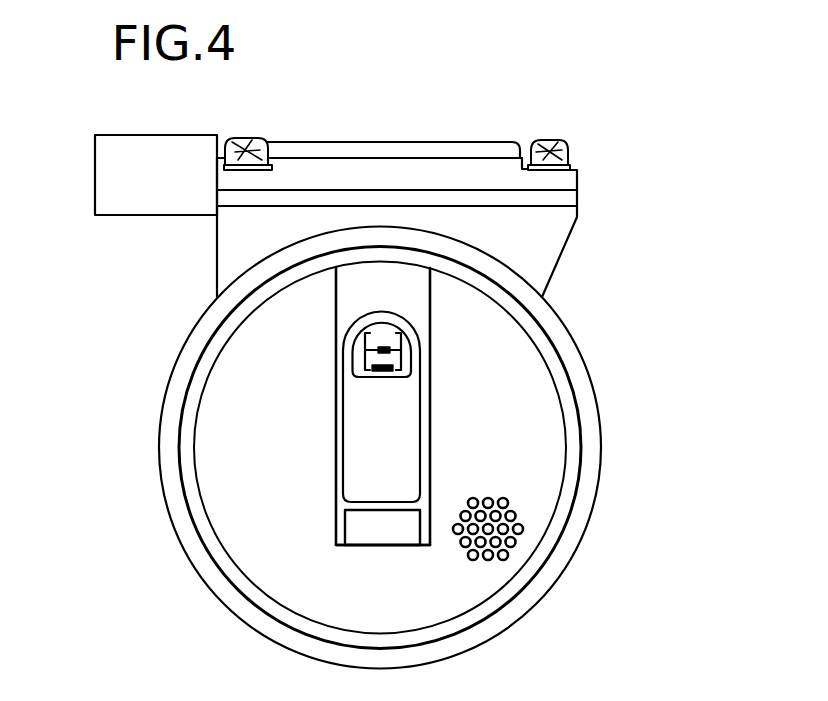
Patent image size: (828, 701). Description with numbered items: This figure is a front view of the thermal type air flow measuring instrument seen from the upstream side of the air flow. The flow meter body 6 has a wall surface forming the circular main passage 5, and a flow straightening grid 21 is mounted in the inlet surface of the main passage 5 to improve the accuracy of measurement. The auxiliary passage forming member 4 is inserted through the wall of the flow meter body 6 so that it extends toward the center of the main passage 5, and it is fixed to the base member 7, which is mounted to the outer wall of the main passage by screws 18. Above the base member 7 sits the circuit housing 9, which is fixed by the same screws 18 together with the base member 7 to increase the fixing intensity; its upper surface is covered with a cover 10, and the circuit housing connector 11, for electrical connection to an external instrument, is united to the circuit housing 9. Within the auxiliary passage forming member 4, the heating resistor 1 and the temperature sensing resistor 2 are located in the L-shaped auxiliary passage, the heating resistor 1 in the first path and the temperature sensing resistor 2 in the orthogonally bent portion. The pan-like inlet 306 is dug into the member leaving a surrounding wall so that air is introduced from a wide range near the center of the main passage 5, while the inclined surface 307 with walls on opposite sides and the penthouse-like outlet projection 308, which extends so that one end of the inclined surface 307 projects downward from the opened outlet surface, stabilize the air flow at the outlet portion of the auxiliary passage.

The heating resistor 1 is at (384, 348).
The temperature sensing resistor 2 is at (384, 370).
The auxiliary passage forming member 4 is at (432, 465).
The main passage 5 is at (523, 402).
The flow meter body 6 is at (603, 433).
The base member 7 is at (577, 197).
The circuit housing 9 is at (578, 170).
The cover 10 is at (302, 145).
The circuit housing connector 11 is at (95, 152).
The screws 18 is at (228, 140).
The flow straightening grid 21 is at (520, 512).
The pan-like inlet 306 is at (367, 460).
The inclined surface 307 is at (367, 533).
The outlet projection 308 is at (403, 547).